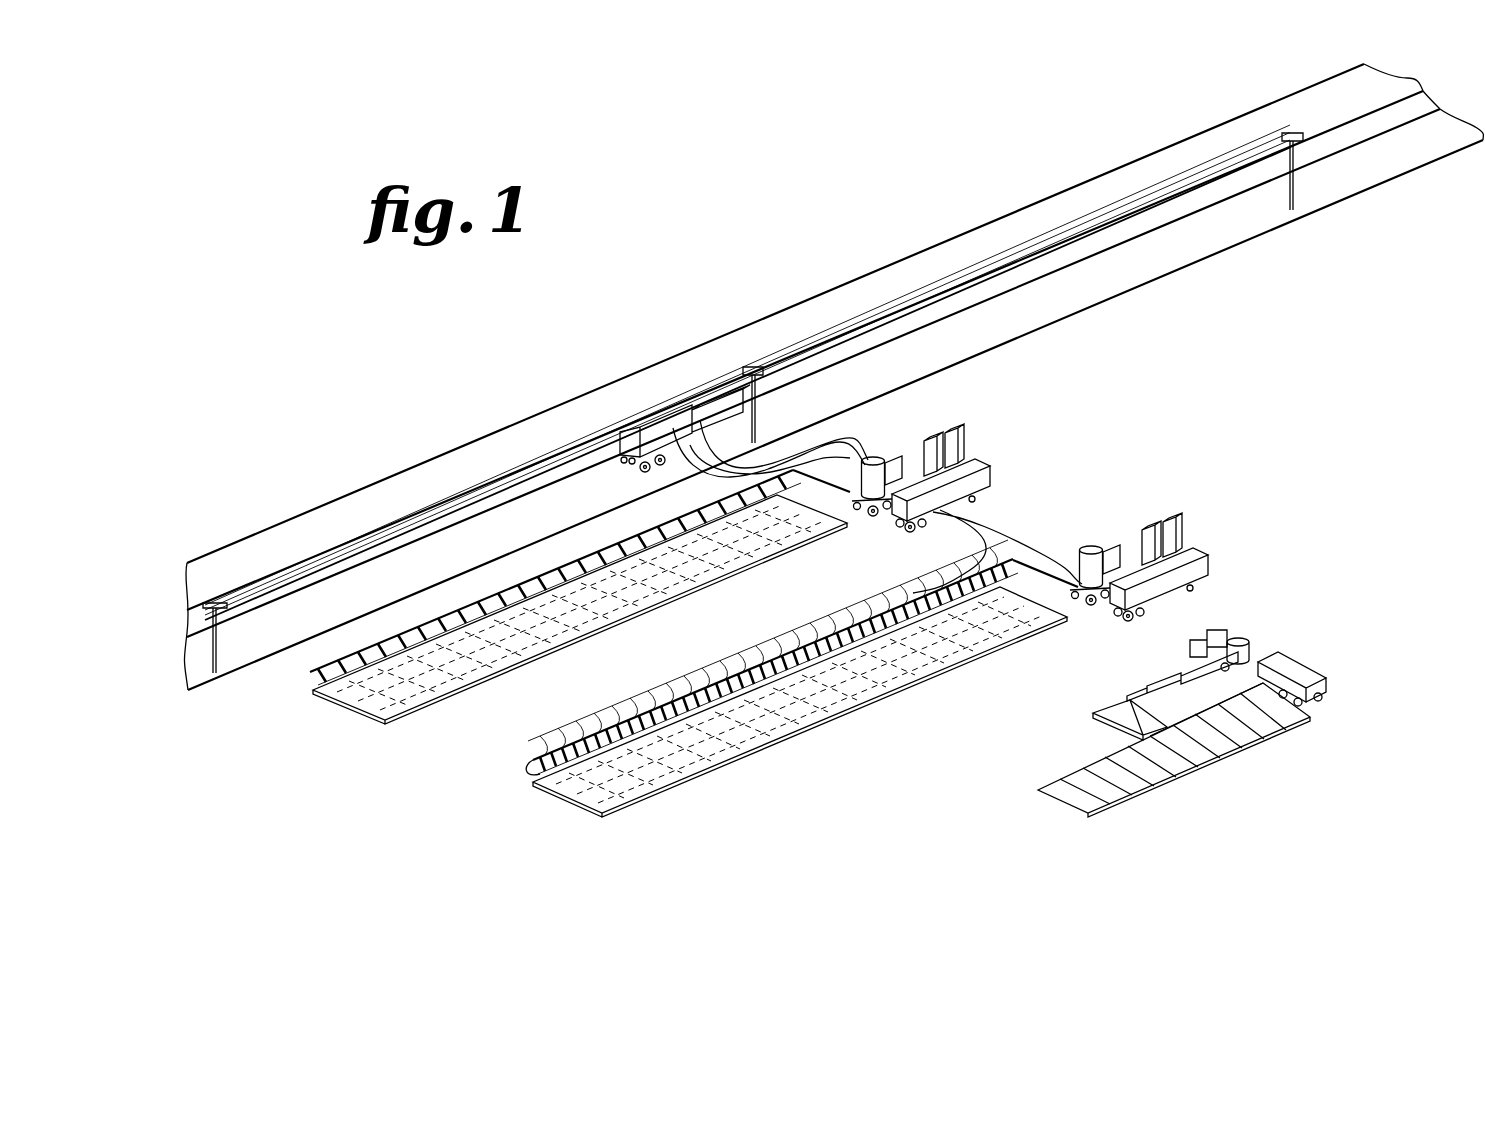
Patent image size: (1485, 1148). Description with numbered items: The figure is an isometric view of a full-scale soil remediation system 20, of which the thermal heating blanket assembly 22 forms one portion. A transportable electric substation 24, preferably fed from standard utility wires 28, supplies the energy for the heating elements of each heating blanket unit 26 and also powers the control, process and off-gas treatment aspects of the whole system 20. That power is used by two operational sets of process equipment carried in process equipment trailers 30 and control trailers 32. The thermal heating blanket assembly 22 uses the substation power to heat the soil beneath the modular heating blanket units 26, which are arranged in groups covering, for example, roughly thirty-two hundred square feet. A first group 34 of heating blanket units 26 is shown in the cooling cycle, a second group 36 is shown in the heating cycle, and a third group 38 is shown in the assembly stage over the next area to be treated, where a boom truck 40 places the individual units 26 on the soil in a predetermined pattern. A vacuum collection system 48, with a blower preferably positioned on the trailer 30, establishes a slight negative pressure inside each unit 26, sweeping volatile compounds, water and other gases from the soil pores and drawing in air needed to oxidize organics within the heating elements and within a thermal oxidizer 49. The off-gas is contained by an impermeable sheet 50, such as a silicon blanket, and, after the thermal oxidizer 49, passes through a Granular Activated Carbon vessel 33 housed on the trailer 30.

The remediation system 20 is at (1122, 432).
The thermal heating blanket assembly 22 is at (333, 721).
The transportable electric substation 24 is at (660, 430).
The heating blanket unit 26 is at (357, 684).
The utility wires 28 is at (752, 368).
The process equipment trailer 30 is at (1077, 491).
The control trailer 32 is at (967, 478).
The Granular Activated Carbon (GAC) vessel 33 is at (957, 440).
The first group 34 is at (789, 684).
The second group 36 is at (933, 649).
The third group 38 is at (1176, 767).
The boom truck 40 is at (1293, 670).
The vacuum collection system 48 is at (820, 466).
The thermal oxidizer 49 is at (873, 458).
The impermeable sheet 50 is at (367, 712).